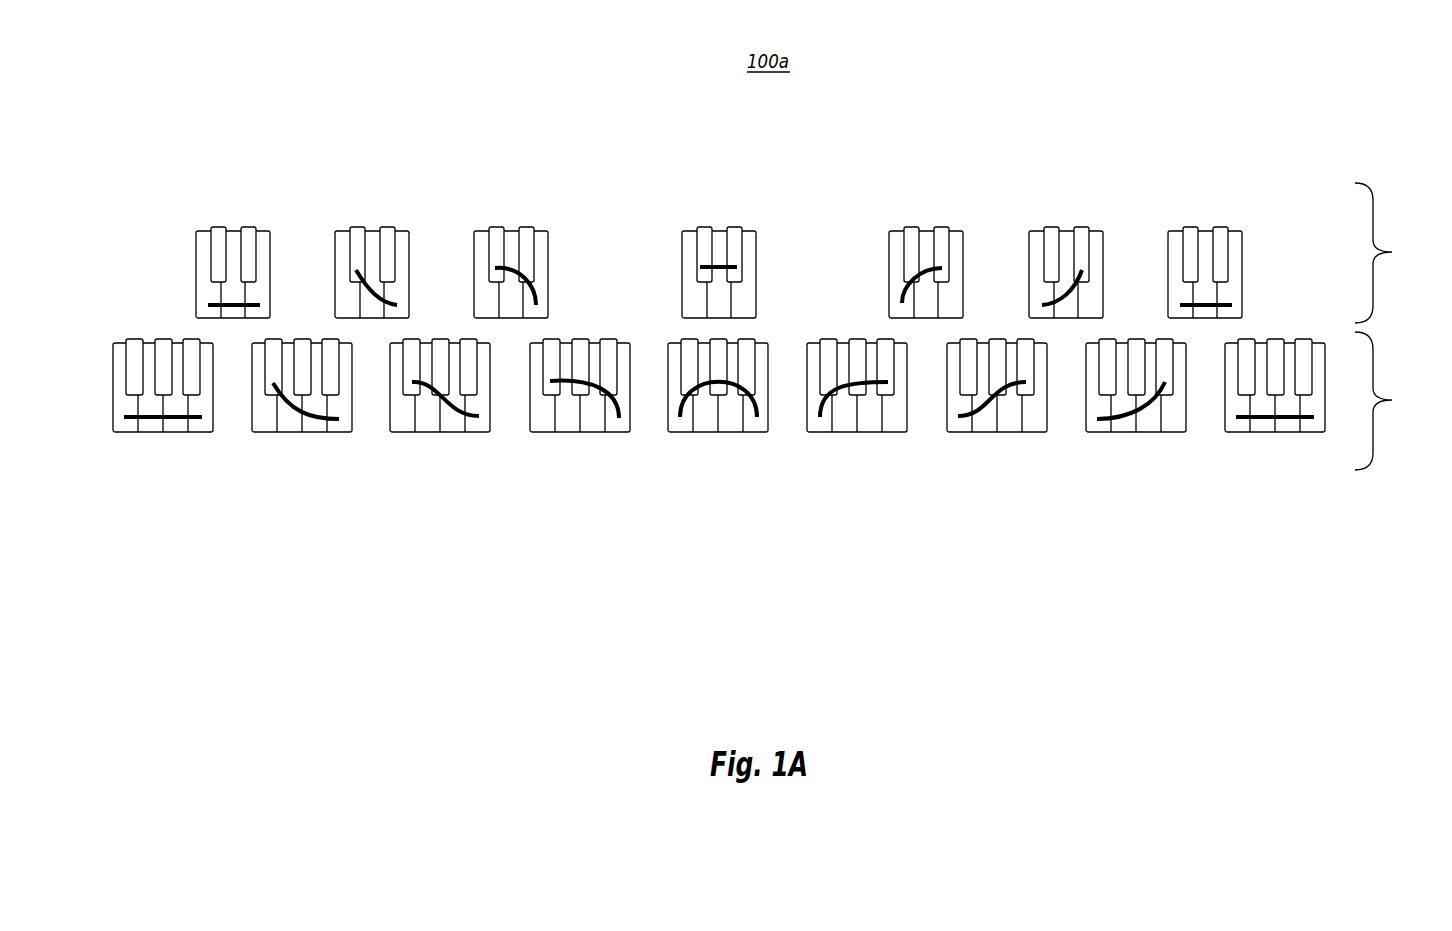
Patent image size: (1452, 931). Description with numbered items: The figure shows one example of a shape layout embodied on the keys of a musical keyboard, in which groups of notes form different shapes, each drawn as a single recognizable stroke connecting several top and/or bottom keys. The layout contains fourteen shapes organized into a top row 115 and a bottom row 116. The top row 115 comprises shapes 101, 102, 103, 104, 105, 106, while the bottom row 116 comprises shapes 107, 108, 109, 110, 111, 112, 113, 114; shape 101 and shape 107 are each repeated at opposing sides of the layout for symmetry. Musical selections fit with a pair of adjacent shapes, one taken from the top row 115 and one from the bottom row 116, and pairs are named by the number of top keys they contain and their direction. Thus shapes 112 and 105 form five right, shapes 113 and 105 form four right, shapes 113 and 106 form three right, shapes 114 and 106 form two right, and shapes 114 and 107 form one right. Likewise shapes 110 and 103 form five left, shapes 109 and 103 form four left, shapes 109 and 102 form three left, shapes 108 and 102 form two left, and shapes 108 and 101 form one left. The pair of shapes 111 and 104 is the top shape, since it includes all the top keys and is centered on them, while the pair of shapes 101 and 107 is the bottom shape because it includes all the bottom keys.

The shape 101 is at (247, 226).
The shape 102 is at (386, 226).
The shape 103 is at (525, 226).
The shape 104 is at (733, 226).
The shape 105 is at (940, 226).
The shape 106 is at (1080, 226).
The shape 107 is at (152, 433).
The shape 108 is at (291, 433).
The shape 109 is at (429, 433).
The shape 110 is at (569, 433).
The shape 111 is at (707, 433).
The shape 112 is at (846, 433).
The shape 113 is at (986, 433).
The shape 114 is at (1125, 433).
The top row 115 is at (812, 250).
The bottom row 116 is at (770, 408).